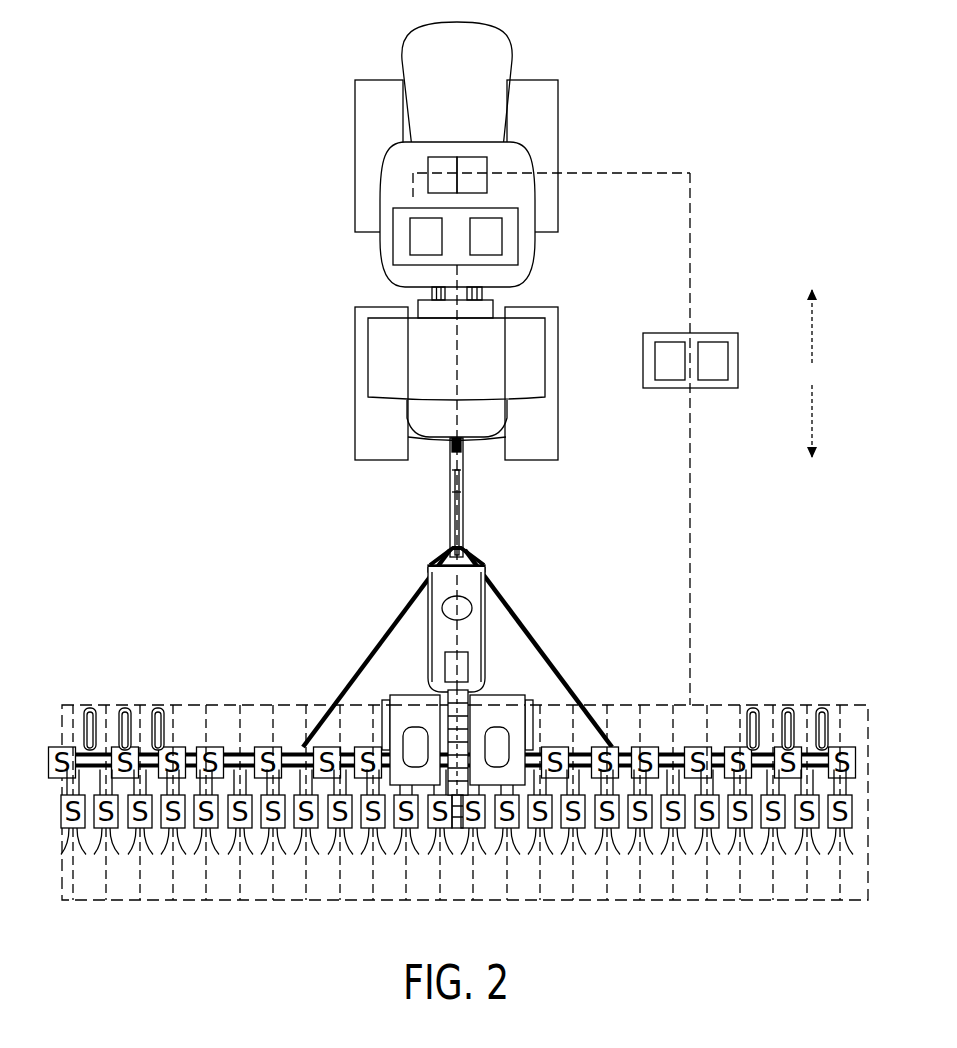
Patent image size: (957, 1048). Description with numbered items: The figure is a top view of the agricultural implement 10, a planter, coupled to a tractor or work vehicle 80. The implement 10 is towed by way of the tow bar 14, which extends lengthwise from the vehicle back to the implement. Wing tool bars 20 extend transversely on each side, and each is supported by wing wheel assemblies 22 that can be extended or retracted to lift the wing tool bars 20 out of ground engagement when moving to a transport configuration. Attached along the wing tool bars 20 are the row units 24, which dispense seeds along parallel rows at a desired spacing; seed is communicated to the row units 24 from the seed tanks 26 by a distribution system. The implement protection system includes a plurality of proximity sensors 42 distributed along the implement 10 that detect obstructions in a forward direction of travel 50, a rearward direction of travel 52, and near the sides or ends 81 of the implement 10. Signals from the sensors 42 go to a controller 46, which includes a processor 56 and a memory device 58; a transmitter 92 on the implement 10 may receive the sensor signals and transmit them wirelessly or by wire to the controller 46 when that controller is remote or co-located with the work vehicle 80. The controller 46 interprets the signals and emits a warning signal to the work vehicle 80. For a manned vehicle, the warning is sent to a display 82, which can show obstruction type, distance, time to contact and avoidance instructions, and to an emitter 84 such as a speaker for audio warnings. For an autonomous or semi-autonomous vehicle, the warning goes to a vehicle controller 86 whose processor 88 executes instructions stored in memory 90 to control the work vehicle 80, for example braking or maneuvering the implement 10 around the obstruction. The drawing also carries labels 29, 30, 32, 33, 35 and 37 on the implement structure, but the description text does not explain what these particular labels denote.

The agricultural implement 10 is at (236, 460).
The tow bar 14 is at (450, 535).
The wing tool bars 20 is at (237, 755).
The wing wheel assemblies 22 is at (122, 696).
The row units 24 is at (143, 830).
The seed tanks 26 is at (412, 777).
The wing section 29 is at (210, 616).
The center frame section 30 is at (408, 830).
The brace 32 is at (557, 672).
The fold direction 33 is at (421, 670).
The tow bar 35 is at (450, 500).
The direction of travel 37 is at (487, 478).
The proximity sensors 42 is at (457, 873).
The controller 46 is at (714, 333).
The forward direction of travel 50 is at (812, 328).
The rearward direction of travel 52 is at (812, 418).
The processor 56 is at (668, 388).
The memory device 58 is at (712, 388).
The work vehicle 80 is at (353, 158).
The ends 81 is at (67, 744).
The display 82 is at (470, 157).
The emitter 84 is at (440, 157).
The controller 86 is at (488, 208).
The processor 88 is at (410, 237).
The memory 90 is at (502, 237).
The transmitter 92 is at (470, 665).